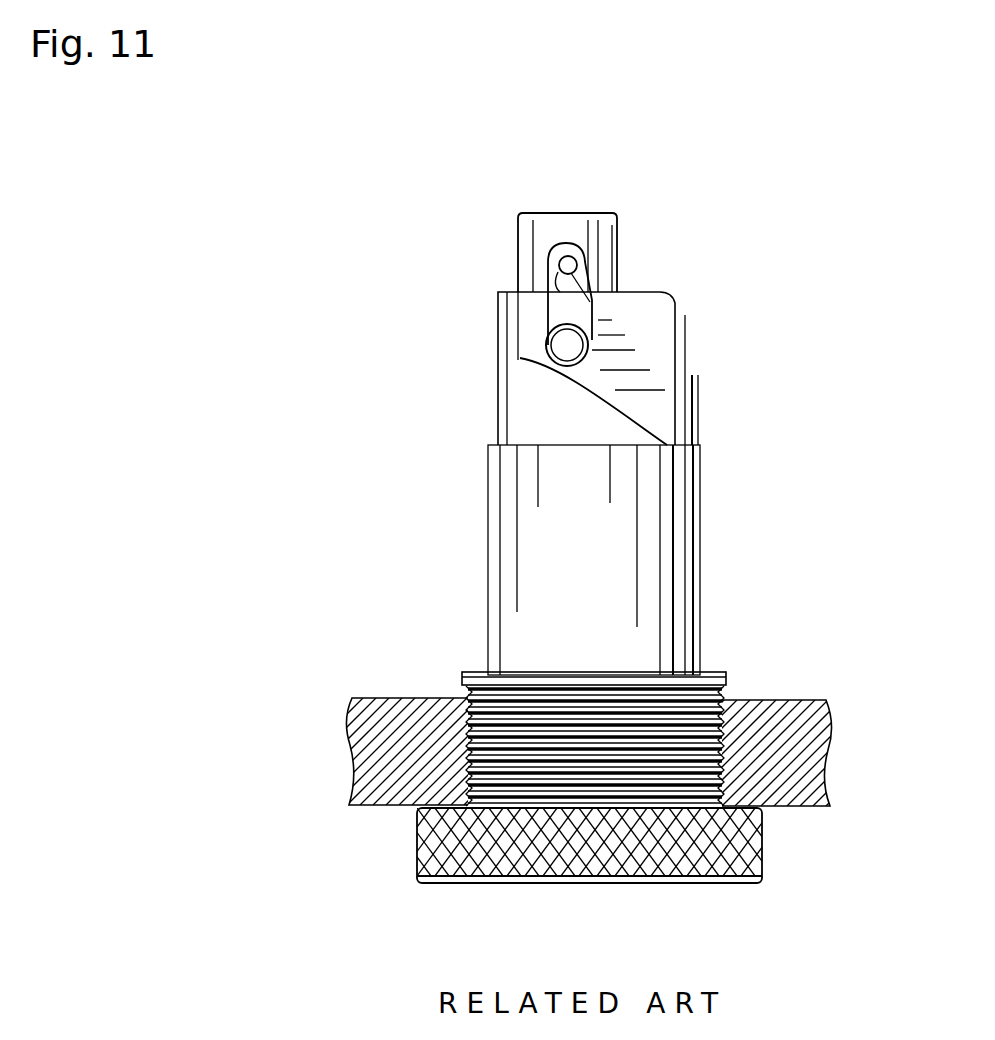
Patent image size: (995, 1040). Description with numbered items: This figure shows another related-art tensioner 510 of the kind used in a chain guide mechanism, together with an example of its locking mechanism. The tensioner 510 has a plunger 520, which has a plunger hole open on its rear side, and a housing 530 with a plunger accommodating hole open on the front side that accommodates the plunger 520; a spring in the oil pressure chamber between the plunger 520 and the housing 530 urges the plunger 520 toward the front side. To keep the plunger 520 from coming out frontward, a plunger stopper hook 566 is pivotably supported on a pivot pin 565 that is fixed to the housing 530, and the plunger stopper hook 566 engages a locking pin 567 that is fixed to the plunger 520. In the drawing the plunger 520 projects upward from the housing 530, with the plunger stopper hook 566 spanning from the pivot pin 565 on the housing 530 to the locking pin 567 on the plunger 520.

The tensioner 510 is at (373, 155).
The plunger 520 is at (568, 227).
The housing 530 is at (648, 350).
The pivot pin 565 is at (543, 353).
The plunger stopper hook 566 is at (560, 302).
The locking pin 567 is at (563, 257).